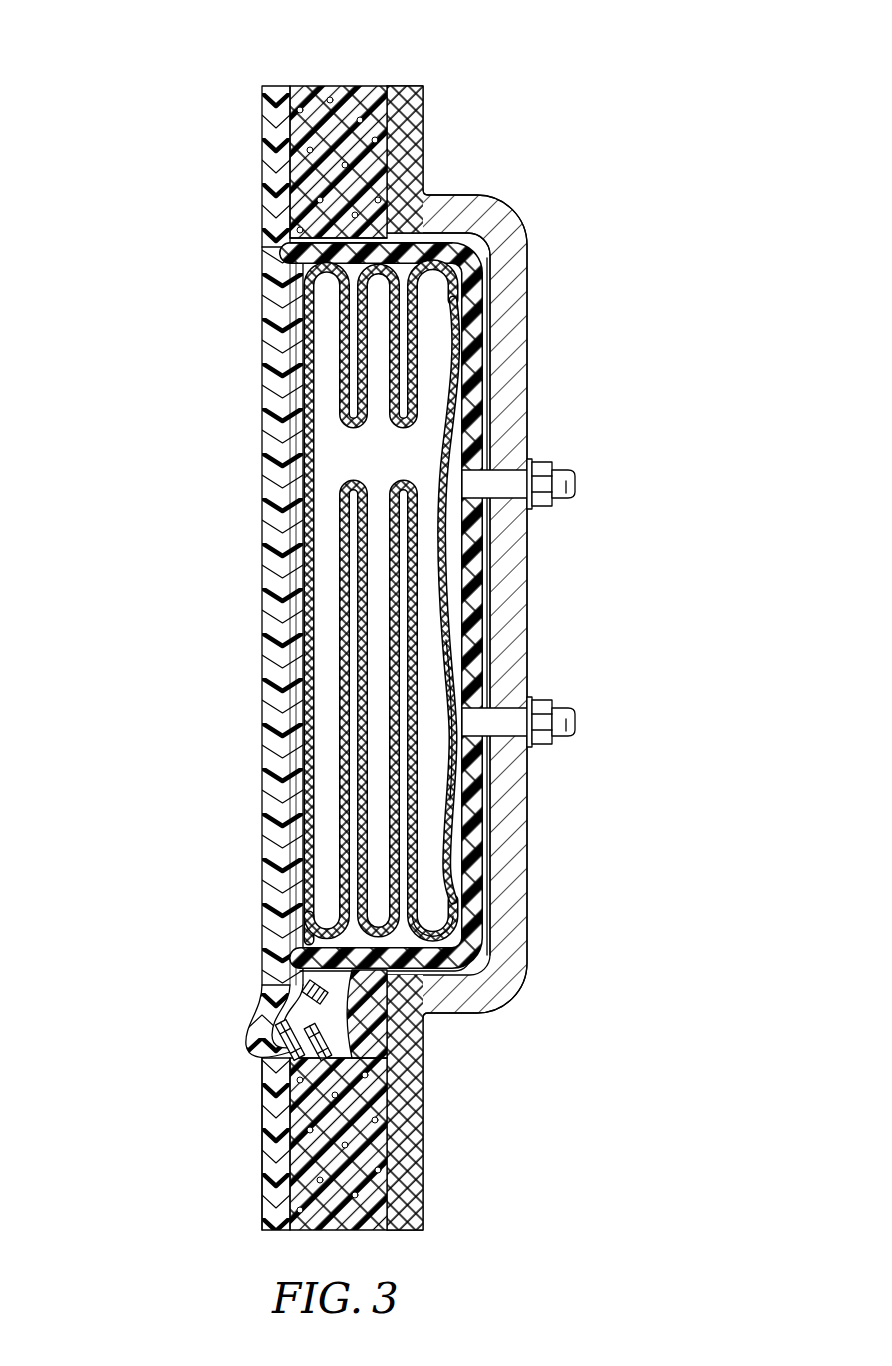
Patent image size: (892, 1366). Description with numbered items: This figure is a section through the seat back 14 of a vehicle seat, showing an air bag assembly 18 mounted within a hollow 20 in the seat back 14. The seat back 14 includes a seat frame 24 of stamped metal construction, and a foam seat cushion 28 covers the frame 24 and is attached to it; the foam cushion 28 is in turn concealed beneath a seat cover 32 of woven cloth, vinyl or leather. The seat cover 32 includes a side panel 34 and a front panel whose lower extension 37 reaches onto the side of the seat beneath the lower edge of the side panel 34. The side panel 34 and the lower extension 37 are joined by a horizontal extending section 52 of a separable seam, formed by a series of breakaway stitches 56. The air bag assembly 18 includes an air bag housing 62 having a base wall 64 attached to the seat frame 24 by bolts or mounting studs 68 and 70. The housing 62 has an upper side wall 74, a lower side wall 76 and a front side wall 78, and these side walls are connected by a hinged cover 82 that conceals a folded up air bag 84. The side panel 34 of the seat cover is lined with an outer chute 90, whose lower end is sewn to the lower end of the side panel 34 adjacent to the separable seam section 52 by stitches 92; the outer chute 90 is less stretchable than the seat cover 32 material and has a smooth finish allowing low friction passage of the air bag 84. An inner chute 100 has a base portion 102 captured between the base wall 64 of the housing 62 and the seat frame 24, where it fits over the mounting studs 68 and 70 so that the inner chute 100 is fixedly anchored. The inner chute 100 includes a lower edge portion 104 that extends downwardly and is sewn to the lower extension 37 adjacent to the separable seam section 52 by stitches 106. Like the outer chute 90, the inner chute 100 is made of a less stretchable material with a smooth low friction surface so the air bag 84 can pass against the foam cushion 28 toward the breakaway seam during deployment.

The seat back 14 is at (400, 108).
The air bag assembly 18 is at (438, 879).
The hollow 20 is at (335, 250).
The seat frame 24 is at (520, 293).
The foam seat cushion 28 is at (318, 112).
The seat cover 32 is at (262, 247).
The side panel 34 is at (262, 767).
The lower extension 37 is at (272, 1152).
The horizontal extending section 52 is at (262, 1045).
The breakaway stitches 56 is at (275, 1055).
The air bag housing 62 is at (470, 585).
The base wall 64 is at (468, 655).
The mounting stud 68 is at (575, 487).
The mounting stud 70 is at (575, 722).
The upper side wall 74 is at (398, 250).
The lower side wall 76 is at (430, 960).
The front side wall 78 is at (368, 452).
The hinged cover 82 is at (293, 890).
The air bag 84 is at (418, 907).
The outer chute 90 is at (278, 738).
The stitches 92 is at (300, 992).
The inner chute 100 is at (493, 410).
The base portion 102 is at (485, 377).
The lower edge portion 104 is at (347, 987).
The stitches 106 is at (345, 1042).